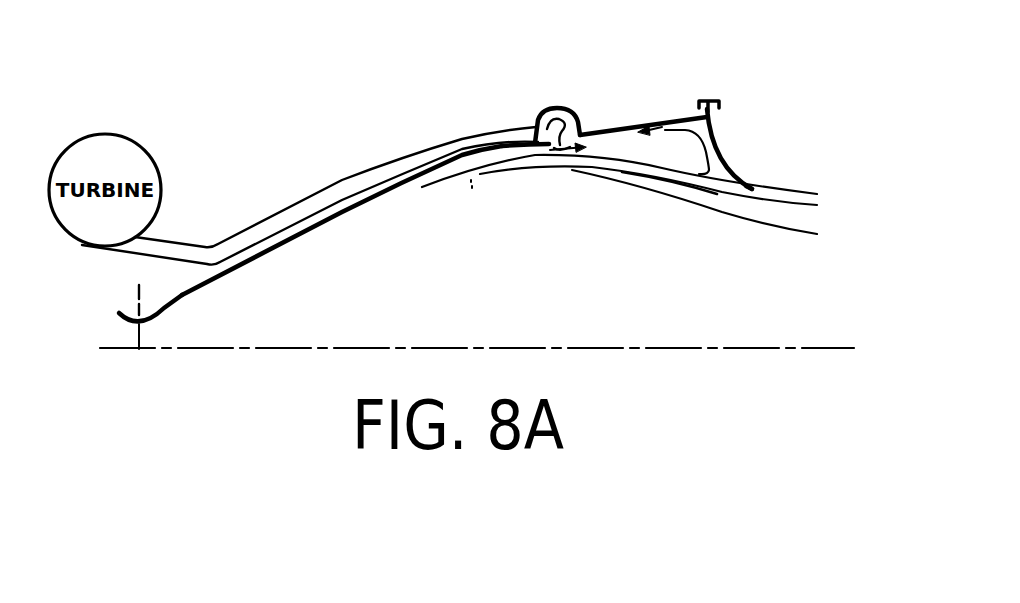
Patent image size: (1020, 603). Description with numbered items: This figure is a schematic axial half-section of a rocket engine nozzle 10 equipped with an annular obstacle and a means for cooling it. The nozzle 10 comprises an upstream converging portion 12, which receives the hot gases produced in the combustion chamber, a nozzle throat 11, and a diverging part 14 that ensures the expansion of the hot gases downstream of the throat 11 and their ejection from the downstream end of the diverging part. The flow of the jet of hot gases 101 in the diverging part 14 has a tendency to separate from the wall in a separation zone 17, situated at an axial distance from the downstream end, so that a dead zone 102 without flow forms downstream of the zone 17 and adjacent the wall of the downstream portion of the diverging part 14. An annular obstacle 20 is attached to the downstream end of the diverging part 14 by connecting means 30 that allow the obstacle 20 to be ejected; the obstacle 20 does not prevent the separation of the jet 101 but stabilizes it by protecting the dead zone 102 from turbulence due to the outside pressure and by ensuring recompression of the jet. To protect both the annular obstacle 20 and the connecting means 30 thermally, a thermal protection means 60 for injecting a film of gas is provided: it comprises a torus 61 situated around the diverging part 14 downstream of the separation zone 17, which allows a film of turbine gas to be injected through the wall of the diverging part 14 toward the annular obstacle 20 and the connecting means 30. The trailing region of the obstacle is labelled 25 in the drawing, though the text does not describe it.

The nozzle 10 is at (182, 291).
The nozzle throat 11 is at (130, 314).
The upstream converging portion 12 is at (121, 313).
The diverging part 14 is at (383, 187).
The separation zone 17 is at (528, 143).
The annular obstacle 20 is at (718, 148).
The trailing edge 25 is at (753, 188).
The connecting means 30 is at (707, 96).
The thermal protection means 60 is at (572, 99).
The torus 61 is at (536, 118).
The jet of hot gases 101 is at (747, 220).
The dead zone 102 is at (662, 122).